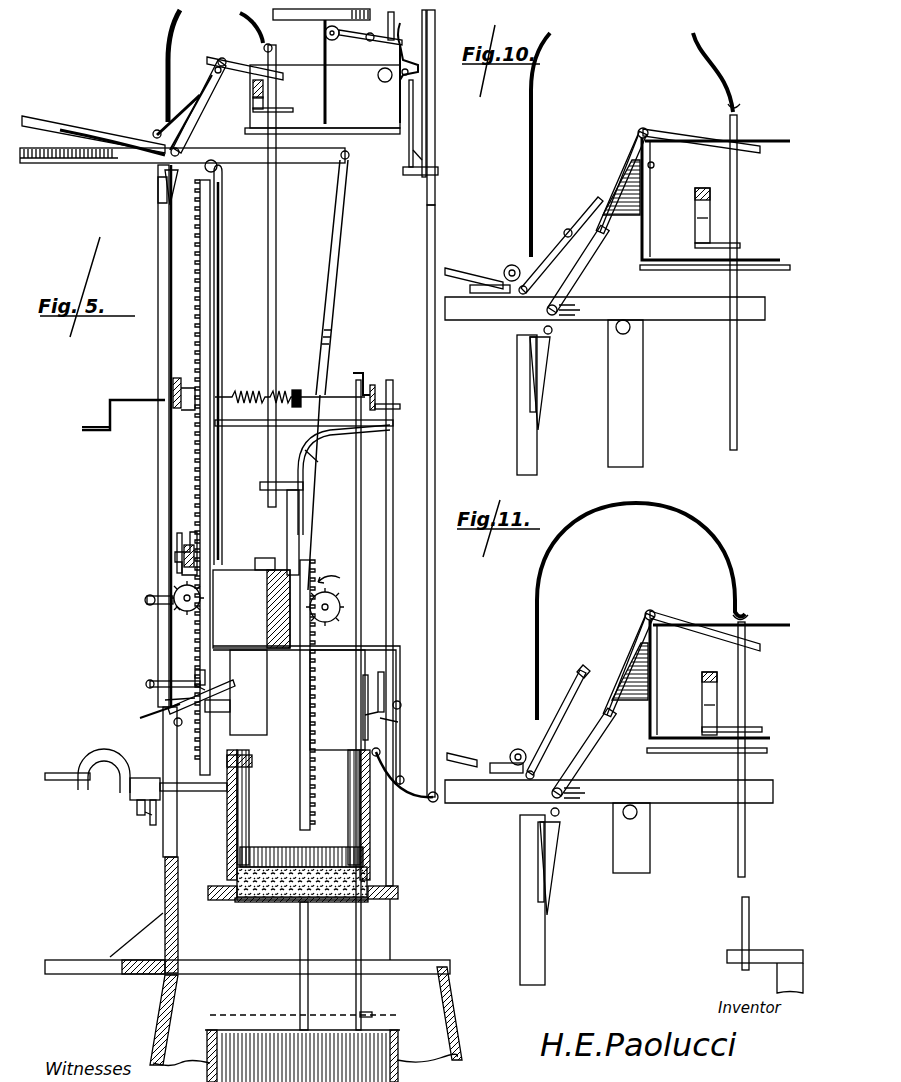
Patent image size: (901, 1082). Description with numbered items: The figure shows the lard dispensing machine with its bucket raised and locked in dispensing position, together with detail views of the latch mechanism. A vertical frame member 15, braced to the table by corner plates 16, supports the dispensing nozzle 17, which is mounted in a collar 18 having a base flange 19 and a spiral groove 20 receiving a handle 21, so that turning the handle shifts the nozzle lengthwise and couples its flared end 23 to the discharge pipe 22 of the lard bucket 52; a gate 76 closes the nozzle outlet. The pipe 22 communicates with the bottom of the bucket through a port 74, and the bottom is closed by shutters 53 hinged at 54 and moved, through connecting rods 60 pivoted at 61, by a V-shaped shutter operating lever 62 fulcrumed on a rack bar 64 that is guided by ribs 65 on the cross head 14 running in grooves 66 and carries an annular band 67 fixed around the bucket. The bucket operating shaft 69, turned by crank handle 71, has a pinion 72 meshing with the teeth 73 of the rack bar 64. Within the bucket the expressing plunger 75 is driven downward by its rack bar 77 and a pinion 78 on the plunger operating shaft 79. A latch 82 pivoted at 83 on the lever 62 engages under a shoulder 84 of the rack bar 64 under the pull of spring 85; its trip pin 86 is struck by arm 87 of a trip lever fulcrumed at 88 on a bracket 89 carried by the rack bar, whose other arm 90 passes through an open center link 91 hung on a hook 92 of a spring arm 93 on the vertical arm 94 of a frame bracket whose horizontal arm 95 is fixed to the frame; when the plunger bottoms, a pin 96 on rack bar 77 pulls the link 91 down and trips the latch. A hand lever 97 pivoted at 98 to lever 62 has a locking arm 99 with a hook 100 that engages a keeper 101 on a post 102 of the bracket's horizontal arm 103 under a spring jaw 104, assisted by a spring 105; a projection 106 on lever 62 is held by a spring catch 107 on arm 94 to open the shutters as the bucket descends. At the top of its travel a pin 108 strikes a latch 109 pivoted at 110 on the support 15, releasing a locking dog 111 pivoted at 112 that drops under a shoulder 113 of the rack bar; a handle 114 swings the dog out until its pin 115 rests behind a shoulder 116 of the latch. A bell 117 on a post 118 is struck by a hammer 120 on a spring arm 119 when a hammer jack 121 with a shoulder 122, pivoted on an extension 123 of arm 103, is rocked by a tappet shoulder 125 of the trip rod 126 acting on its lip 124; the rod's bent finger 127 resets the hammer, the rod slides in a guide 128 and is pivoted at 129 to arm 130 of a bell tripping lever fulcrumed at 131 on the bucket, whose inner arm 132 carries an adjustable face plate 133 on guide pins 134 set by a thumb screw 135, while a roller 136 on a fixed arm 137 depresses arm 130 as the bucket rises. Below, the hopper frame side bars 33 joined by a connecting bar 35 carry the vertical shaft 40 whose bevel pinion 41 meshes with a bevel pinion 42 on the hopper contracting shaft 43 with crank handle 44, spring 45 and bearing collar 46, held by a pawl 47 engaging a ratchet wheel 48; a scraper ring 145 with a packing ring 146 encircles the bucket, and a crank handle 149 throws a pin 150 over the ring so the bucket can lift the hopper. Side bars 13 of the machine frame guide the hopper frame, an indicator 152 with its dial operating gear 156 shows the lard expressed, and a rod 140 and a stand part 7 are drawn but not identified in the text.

In FIG. 5, the leg 7 is at (160, 1012).
In FIG. 5, the side bars of the machine frame 13 is at (280, 702).
In FIG. 5, the cross head 14 is at (251, 609).
In FIG. 5, the frame member 15 is at (165, 877).
In FIG. 5, the corner plates or braces 16 is at (147, 933).
In FIG. 5, the dispensing nozzle 17 is at (80, 760).
In FIG. 5, the collar 18 is at (138, 805).
In FIG. 5, the base flange 19 is at (155, 815).
In FIG. 5, the spiral groove 20 is at (130, 792).
In FIG. 5, the handle 21 is at (148, 815).
In FIG. 5, the discharge pipe 22 is at (227, 838).
In FIG. 5, the flared and tapered inner end of nozzle 23 is at (195, 792).
In FIG. 5, the side bars of the hopper frame 33 is at (315, 450).
In FIG. 5, the connecting bar 35 is at (390, 430).
In FIG. 5, the vertical shaft 40 is at (427, 540).
In FIG. 5, the bevel pinion 41 is at (392, 404).
In FIG. 5, the bevel pinion 42 is at (375, 390).
In FIG. 5, the hopper contracting shaft 43 is at (128, 398).
In FIG. 5, the crank handle 44 is at (90, 432).
In FIG. 5, the spring 45 is at (244, 392).
In FIG. 5, the fixed bearing collar 46 is at (297, 390).
In FIG. 5, the pawl 47 is at (180, 378).
In FIG. 5, the ratchet wheel 48 is at (175, 410).
In FIG. 5, the lard extracting bucket 52 is at (320, 695).
In FIG. 5, the shutters 53 is at (309, 905).
In FIG. 5, the hinge of shutters 54 is at (230, 902).
In FIG. 5, the connecting rods 60 is at (338, 258).
In FIG. 5, the pivot 61 is at (337, 160).
In FIG. 5, the shutter operating lever 62 is at (90, 163).
In FIG. 10, the shutter operating lever 62 is at (702, 322).
In FIG. 11, the shutter operating lever 62 is at (724, 803).
In FIG. 5, the rack bar 64 is at (223, 262).
In FIG. 10, the rack bar 64 is at (643, 405).
In FIG. 11, the rack bar 64 is at (650, 860).
In FIG. 5, the guide ribs 65 is at (217, 172).
In FIG. 10, the guide ribs 65 is at (618, 333).
In FIG. 11, the guide ribs 65 is at (638, 815).
In FIG. 5, the grooves 66 is at (221, 322).
In FIG. 5, the annular band 67 is at (252, 763).
In FIG. 5, the bucket operating shaft 69 is at (178, 592).
In FIG. 5, the operating crank handle 71 is at (145, 600).
In FIG. 5, the pinion 72 is at (178, 610).
In FIG. 5, the teeth of the rack bar 73 is at (198, 475).
In FIG. 5, the port 74 is at (265, 905).
In FIG. 5, the expressing plunger 75 is at (365, 857).
In FIG. 5, the gate or shutter 76 is at (52, 781).
In FIG. 5, the plunger rack bar 77 is at (287, 518).
In FIG. 5, the pinion 78 is at (342, 608).
In FIG. 5, the plunger operating shaft 79 is at (340, 600).
In FIG. 5, the latch 82 is at (153, 130).
In FIG. 10, the latch 82 is at (566, 231).
In FIG. 11, the latch 82 is at (583, 672).
In FIG. 10, the latch pivot 83 is at (520, 295).
In FIG. 11, the latch pivot 83 is at (528, 782).
In FIG. 5, the shoulder 84 is at (200, 95).
In FIG. 10, the shoulder 84 is at (605, 180).
In FIG. 11, the shoulder 84 is at (618, 672).
In FIG. 10, the spring 85 is at (508, 265).
In FIG. 11, the spring 85 is at (516, 748).
In FIG. 5, the trip pin 86 is at (167, 113).
In FIG. 10, the trip pin 86 is at (597, 203).
In FIG. 11, the trip pin 86 is at (560, 710).
In FIG. 10, the arm of trip lever 87 is at (635, 135).
In FIG. 11, the arm of trip lever 87 is at (640, 622).
In FIG. 5, the fulcrum 88 is at (226, 60).
In FIG. 10, the fulcrum 88 is at (647, 127).
In FIG. 11, the fulcrum 88 is at (654, 610).
In FIG. 5, the bracket 89 is at (252, 80).
In FIG. 10, the bracket 89 is at (652, 190).
In FIG. 11, the bracket 89 is at (658, 657).
In FIG. 5, the arm of trip lever 90 is at (256, 68).
In FIG. 10, the arm of trip lever 90 is at (762, 150).
In FIG. 11, the arm of trip lever 90 is at (695, 625).
In FIG. 5, the open center link 91 is at (277, 280).
In FIG. 10, the open center link 91 is at (738, 385).
In FIG. 11, the open center link 91 is at (746, 843).
In FIG. 5, the hook 92 is at (275, 39).
In FIG. 10, the hook 92 is at (742, 108).
In FIG. 11, the hook 92 is at (750, 617).
In FIG. 5, the spring arm 93 is at (243, 15).
In FIG. 10, the spring arm 93 is at (537, 90).
In FIG. 11, the spring arm 93 is at (700, 522).
In FIG. 5, the vertical arm of bracket 94 is at (158, 252).
In FIG. 10, the vertical arm of bracket 94 is at (537, 442).
In FIG. 5, the horizontal arm of bracket 95 is at (175, 558).
In FIG. 5, the pin 96 is at (258, 484).
In FIG. 11, the pin 96 is at (765, 950).
In FIG. 5, the hand operated lever 97 is at (97, 128).
In FIG. 10, the hand operated lever 97 is at (455, 267).
In FIG. 5, the pivot 98 is at (178, 160).
In FIG. 10, the pivot 98 is at (558, 309).
In FIG. 11, the pivot 98 is at (563, 793).
In FIG. 5, the locking arm 99 is at (187, 117).
In FIG. 10, the locking arm 99 is at (568, 283).
In FIG. 11, the locking arm 99 is at (580, 767).
In FIG. 5, the locking lip or hook 100 is at (216, 68).
In FIG. 10, the locking lip or hook 100 is at (655, 168).
In FIG. 5, the keeper 101 is at (262, 100).
In FIG. 10, the keeper 101 is at (712, 218).
In FIG. 11, the keeper 101 is at (720, 705).
In FIG. 5, the post 102 is at (290, 104).
In FIG. 10, the post 102 is at (742, 244).
In FIG. 11, the post 102 is at (750, 730).
In FIG. 5, the horizontally projecting arm 103 is at (376, 137).
In FIG. 10, the horizontally projecting arm 103 is at (770, 271).
In FIG. 11, the horizontally projecting arm 103 is at (704, 753).
In FIG. 5, the spring jaw 104 is at (265, 88).
In FIG. 10, the spring jaw 104 is at (712, 192).
In FIG. 11, the spring jaw 104 is at (720, 678).
In FIG. 5, the spring 105 is at (78, 132).
In FIG. 5, the projection 106 is at (156, 180).
In FIG. 10, the projection 106 is at (553, 332).
In FIG. 11, the projection 106 is at (560, 815).
In FIG. 5, the spring catch 107 is at (168, 195).
In FIG. 10, the spring catch 107 is at (548, 392).
In FIG. 11, the spring catch 107 is at (555, 885).
In FIG. 5, the pin 108 is at (230, 684).
In FIG. 5, the latch 109 is at (248, 692).
In FIG. 5, the pivot 110 is at (148, 715).
In FIG. 5, the locking dog 111 is at (195, 685).
In FIG. 5, the pivot 112 is at (175, 722).
In FIG. 5, the shoulder 113 is at (198, 672).
In FIG. 5, the handle 114 is at (148, 683).
In FIG. 5, the pin 115 is at (225, 702).
In FIG. 5, the shoulder 116 is at (165, 700).
In FIG. 5, the bell 117 is at (305, 22).
In FIG. 5, the post 118 is at (329, 88).
In FIG. 5, the spring arm 119 is at (355, 40).
In FIG. 5, the bell hammer 120 is at (381, 71).
In FIG. 5, the hammer jack 121 is at (412, 58).
In FIG. 5, the shoulder 122 is at (410, 40).
In FIG. 5, the extension 123 is at (428, 110).
In FIG. 5, the lip 124 is at (415, 75).
In FIG. 5, the tappet shoulder 125 is at (430, 150).
In FIG. 5, the trip rod 126 is at (436, 195).
In FIG. 5, the depressing finger 127 is at (395, 20).
In FIG. 5, the guide 128 is at (442, 170).
In FIG. 5, the pivot 129 is at (440, 805).
In FIG. 5, the arm of bell tripping lever 130 is at (420, 798).
In FIG. 5, the fulcrum 131 is at (382, 752).
In FIG. 5, the arm of bell tripping lever 132 is at (385, 720).
In FIG. 5, the adjustable face plate 133 is at (365, 715).
In FIG. 5, the guide pins 134 is at (363, 683).
In FIG. 5, the thumb screw 135 is at (402, 703).
In FIG. 5, the roller 136 is at (411, 768).
In FIG. 5, the fixed arm 137 is at (403, 652).
In FIG. 5, the rod 140 is at (394, 493).
In FIG. 5, the scraper ring 145 is at (400, 893).
In FIG. 5, the flexible packing ring 146 is at (372, 880).
In FIG. 5, the crank handle 149 is at (360, 373).
In FIG. 5, the pin 150 is at (375, 1013).
In FIG. 5, the indicator 152 is at (177, 540).
In FIG. 5, the dial operating gear 156 is at (262, 558).